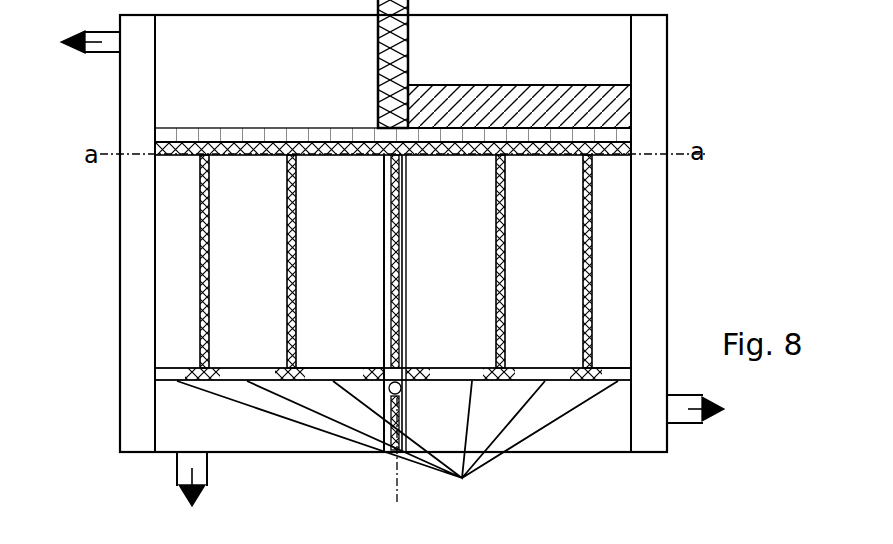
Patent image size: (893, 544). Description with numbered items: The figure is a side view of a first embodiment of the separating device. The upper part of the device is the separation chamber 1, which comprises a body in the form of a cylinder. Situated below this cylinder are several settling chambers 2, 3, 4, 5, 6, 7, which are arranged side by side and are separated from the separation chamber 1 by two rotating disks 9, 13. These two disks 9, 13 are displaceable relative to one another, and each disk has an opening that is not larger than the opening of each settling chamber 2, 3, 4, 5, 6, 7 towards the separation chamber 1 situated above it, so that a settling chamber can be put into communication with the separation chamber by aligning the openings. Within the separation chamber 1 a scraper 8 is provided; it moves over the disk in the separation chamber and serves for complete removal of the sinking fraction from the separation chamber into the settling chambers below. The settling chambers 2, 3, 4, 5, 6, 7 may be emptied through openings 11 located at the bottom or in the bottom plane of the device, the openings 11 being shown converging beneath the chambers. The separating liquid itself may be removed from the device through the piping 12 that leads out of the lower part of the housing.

The separation chamber 1 is at (393, 55).
The settling chamber 2 is at (190, 261).
The settling chamber 3 is at (265, 261).
The settling chamber 4 is at (340, 308).
The settling chamber 5 is at (473, 261).
The settling chamber 6 is at (563, 261).
The settling chamber 7 is at (611, 306).
The scraper 8 is at (618, 95).
The rotating disk 9 is at (162, 142).
The openings 11 is at (397, 441).
The piping 12 is at (201, 465).
The rotating disk 13 is at (633, 148).